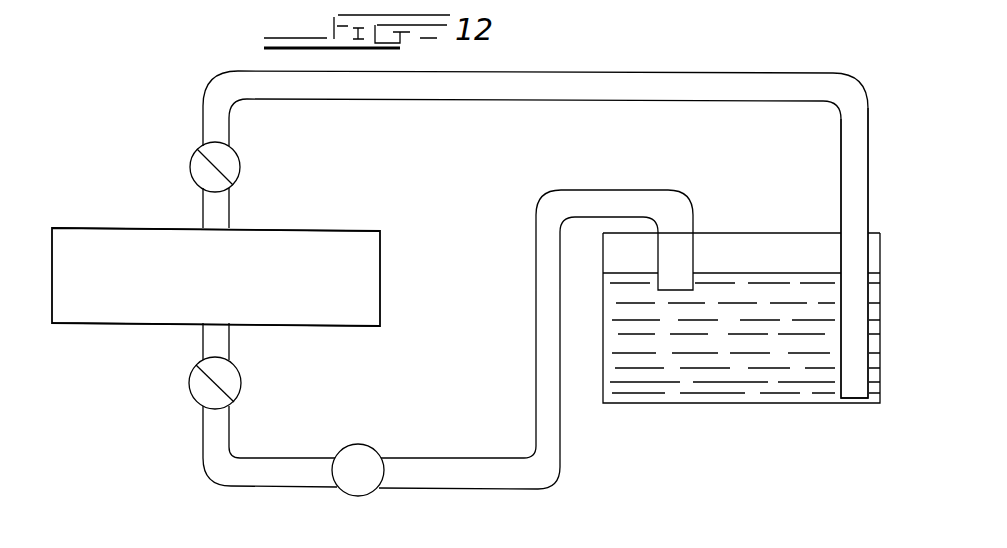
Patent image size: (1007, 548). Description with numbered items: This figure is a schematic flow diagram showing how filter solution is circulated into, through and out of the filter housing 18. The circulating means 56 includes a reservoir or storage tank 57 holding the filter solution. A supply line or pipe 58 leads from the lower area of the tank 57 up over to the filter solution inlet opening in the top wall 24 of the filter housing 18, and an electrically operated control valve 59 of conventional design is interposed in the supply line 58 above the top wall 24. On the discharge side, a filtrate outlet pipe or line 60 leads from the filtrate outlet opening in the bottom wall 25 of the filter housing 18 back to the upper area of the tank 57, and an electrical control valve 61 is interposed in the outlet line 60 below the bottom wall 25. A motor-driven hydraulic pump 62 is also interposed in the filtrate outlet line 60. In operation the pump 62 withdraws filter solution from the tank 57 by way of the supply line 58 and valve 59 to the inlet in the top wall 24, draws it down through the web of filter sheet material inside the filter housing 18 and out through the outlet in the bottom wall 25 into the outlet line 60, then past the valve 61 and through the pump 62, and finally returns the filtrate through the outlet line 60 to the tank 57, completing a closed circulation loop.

The filter housing 18 is at (381, 230).
The top wall 24 is at (326, 228).
The bottom wall 25 is at (364, 327).
The means for circulating the filter solution 56 is at (641, 73).
The reservoir or storage tank 57 is at (723, 405).
The supply line or pipe 58 is at (720, 93).
The electrically operated control valve 59 is at (240, 152).
The filtrate outlet pipe or line 60 is at (262, 473).
The electrical control valve 61 is at (241, 378).
The motor-driven hydraulic pump 62 is at (368, 490).